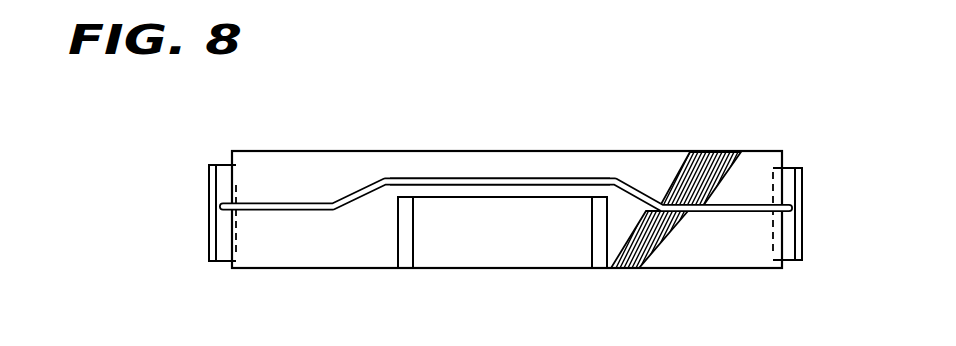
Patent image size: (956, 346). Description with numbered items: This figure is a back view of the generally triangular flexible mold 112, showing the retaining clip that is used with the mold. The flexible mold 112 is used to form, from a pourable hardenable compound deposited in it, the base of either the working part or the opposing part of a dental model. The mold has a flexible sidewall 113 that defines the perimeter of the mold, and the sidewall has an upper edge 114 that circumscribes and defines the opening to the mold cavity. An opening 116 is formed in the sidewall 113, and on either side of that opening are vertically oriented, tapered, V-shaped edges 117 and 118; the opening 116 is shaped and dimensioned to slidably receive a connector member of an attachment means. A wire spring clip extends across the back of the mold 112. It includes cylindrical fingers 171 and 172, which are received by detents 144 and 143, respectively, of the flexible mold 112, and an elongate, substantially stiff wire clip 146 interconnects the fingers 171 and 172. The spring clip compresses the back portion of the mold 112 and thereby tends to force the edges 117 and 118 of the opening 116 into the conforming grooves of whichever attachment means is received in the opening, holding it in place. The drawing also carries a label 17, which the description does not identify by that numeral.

The contact element 17 is at (537, 170).
The flexible mold 112 is at (677, 145).
The flexible sidewall 113 is at (688, 248).
The upper edge 114 is at (310, 268).
The opening 116 is at (583, 263).
The V-shaped edge 117 is at (407, 242).
The V-shaped edge 118 is at (593, 252).
The detent 143 is at (773, 222).
The detent 144 is at (238, 188).
The wire clip 146 is at (458, 178).
The cylindrical finger 171 is at (210, 170).
The cylindrical finger 172 is at (802, 187).